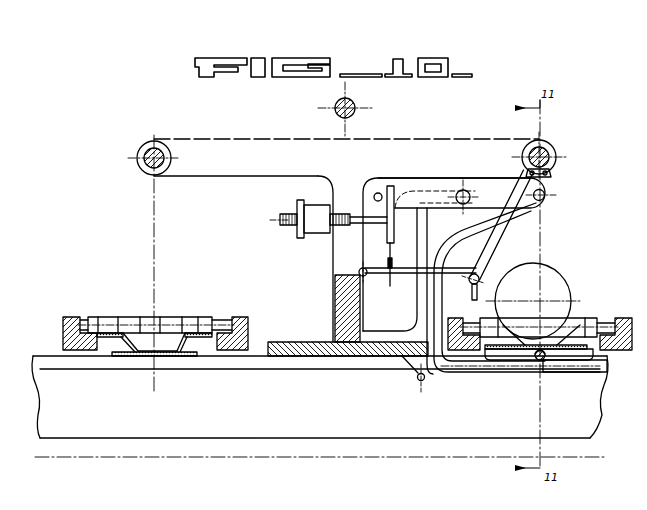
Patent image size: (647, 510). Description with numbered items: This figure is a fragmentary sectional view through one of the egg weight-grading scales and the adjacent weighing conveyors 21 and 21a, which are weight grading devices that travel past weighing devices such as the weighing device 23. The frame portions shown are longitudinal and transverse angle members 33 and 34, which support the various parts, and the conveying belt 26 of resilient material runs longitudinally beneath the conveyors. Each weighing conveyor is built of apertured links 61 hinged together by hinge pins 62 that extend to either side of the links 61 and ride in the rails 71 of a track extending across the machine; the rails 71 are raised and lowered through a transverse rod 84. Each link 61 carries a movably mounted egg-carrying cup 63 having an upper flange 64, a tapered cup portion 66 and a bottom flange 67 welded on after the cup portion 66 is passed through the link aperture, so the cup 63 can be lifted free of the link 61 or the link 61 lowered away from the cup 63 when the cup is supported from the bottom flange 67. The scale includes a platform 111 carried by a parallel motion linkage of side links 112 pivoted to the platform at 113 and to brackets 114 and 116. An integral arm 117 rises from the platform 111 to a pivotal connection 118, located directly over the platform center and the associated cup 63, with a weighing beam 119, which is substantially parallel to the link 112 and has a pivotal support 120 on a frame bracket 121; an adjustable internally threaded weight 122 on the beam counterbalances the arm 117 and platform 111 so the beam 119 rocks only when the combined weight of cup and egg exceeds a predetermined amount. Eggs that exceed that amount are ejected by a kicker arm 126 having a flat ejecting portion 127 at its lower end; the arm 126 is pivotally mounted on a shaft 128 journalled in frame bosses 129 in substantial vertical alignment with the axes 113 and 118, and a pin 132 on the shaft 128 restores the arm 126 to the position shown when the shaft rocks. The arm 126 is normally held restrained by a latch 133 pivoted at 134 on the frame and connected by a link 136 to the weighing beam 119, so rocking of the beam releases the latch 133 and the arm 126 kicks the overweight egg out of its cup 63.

The weighing conveyor 21 is at (599, 310).
The weighing conveyor 21a is at (112, 297).
The weighing device 23 is at (573, 196).
The conveying belt 26 is at (249, 452).
The longitudinal angle member 33 is at (207, 432).
The cross angle member 34 is at (335, 318).
The apertured link 61 is at (208, 317).
The hinge pin 62 is at (83, 317).
The egg-carrying cup 63 is at (148, 353).
The upper flange 64 is at (125, 330).
The tapered cup portion 66 is at (182, 332).
The bottom flange 67 is at (120, 357).
The track rail 71 is at (238, 317).
The rod 84 is at (335, 112).
The platform 111 is at (515, 362).
The side link 112 is at (441, 381).
The pivot 113 is at (546, 362).
The bracket 114 is at (405, 368).
The bracket 116 is at (418, 381).
The arm 117 is at (493, 381).
The pivotal connection 118 is at (549, 201).
The weighing beam 119 is at (413, 188).
The pivotal support 120 is at (458, 190).
The frame bracket 121 is at (417, 313).
The adjustable weight 122 is at (316, 235).
The kicker arm 126 is at (505, 239).
The ejecting portion 127 is at (476, 298).
The shaft 128 is at (143, 148).
The boss 129 is at (215, 137).
The pin 132 is at (556, 166).
The latch 133 is at (458, 268).
The pivot 134 is at (367, 279).
The link 136 is at (388, 252).